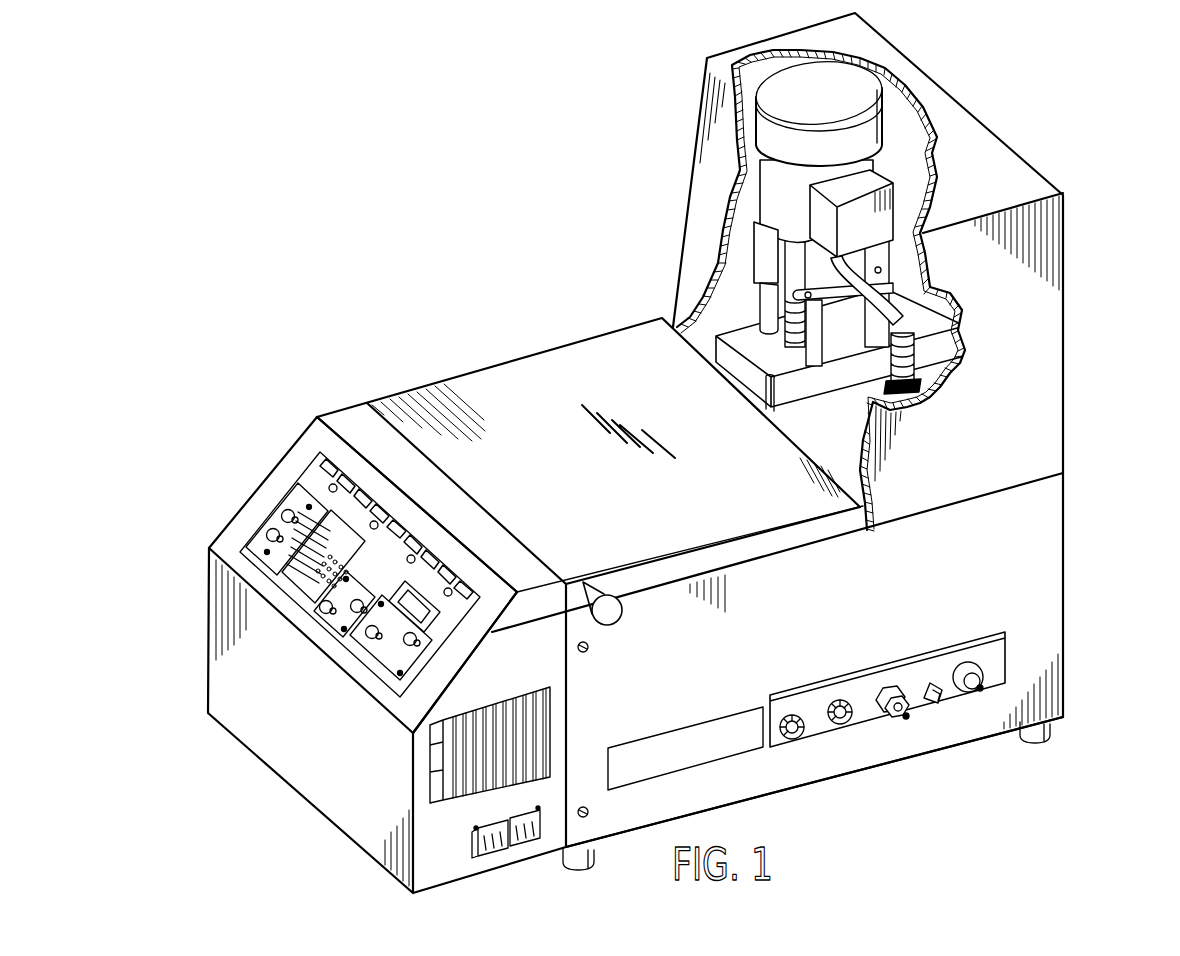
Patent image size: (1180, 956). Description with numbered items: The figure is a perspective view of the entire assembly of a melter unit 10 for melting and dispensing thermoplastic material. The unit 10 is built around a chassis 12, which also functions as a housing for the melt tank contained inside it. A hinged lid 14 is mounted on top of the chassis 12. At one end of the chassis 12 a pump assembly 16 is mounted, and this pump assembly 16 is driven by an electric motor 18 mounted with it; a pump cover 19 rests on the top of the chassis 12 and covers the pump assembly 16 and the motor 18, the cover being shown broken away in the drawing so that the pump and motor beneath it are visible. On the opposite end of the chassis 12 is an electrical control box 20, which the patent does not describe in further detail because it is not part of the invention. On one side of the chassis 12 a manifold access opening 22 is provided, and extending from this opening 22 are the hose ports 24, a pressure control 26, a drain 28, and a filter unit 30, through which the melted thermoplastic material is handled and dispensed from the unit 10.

The melter unit 10 is at (1084, 285).
The chassis 12 is at (1043, 524).
The hinged lid 14 is at (535, 366).
The pump assembly 16 is at (744, 325).
The electric motor 18 is at (860, 86).
The pump cover 19 is at (987, 145).
The electrical control box 20 is at (270, 488).
The manifold access opening 22 is at (1007, 663).
The hose ports 24 is at (797, 737).
The pressure control 26 is at (904, 713).
The drain 28 is at (932, 700).
The filter unit 30 is at (984, 690).